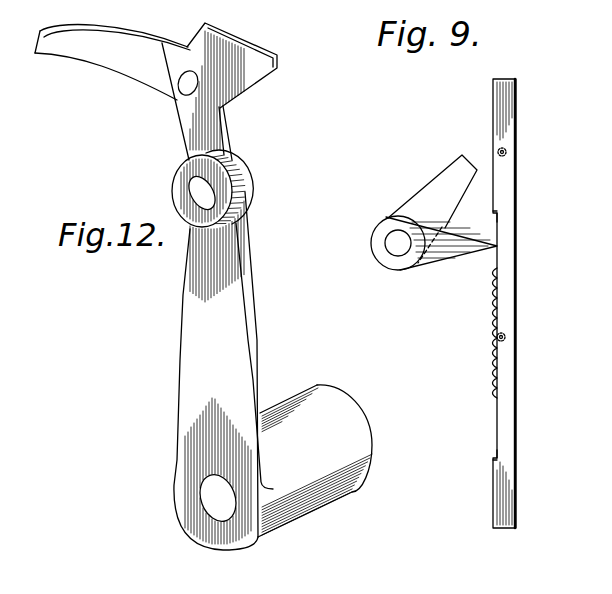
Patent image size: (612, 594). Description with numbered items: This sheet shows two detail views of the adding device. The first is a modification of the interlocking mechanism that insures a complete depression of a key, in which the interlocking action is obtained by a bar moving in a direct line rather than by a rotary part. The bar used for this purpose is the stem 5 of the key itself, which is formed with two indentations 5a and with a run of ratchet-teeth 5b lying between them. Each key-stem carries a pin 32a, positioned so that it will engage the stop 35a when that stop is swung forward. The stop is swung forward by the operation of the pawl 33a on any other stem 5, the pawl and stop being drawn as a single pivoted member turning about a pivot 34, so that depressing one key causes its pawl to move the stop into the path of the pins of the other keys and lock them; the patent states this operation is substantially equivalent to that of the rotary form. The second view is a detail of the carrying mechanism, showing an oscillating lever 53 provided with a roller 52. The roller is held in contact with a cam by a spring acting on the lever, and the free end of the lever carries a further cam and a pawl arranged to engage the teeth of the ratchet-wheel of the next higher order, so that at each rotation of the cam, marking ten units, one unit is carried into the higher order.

In FIG. 9, the stem 5 is at (508, 189).
In FIG. 9, the indentations 5a is at (498, 255).
In FIG. 9, the ratchet-teeth 5b is at (497, 378).
In FIG. 9, the pin 32a is at (506, 152).
In FIG. 9, the pawl 33a is at (457, 247).
In FIG. 9, the pawl pivot 34 is at (392, 247).
In FIG. 9, the stop 35a is at (450, 173).
In FIG. 12, the roller 52 is at (183, 182).
In FIG. 12, the oscillating lever 53 is at (190, 313).